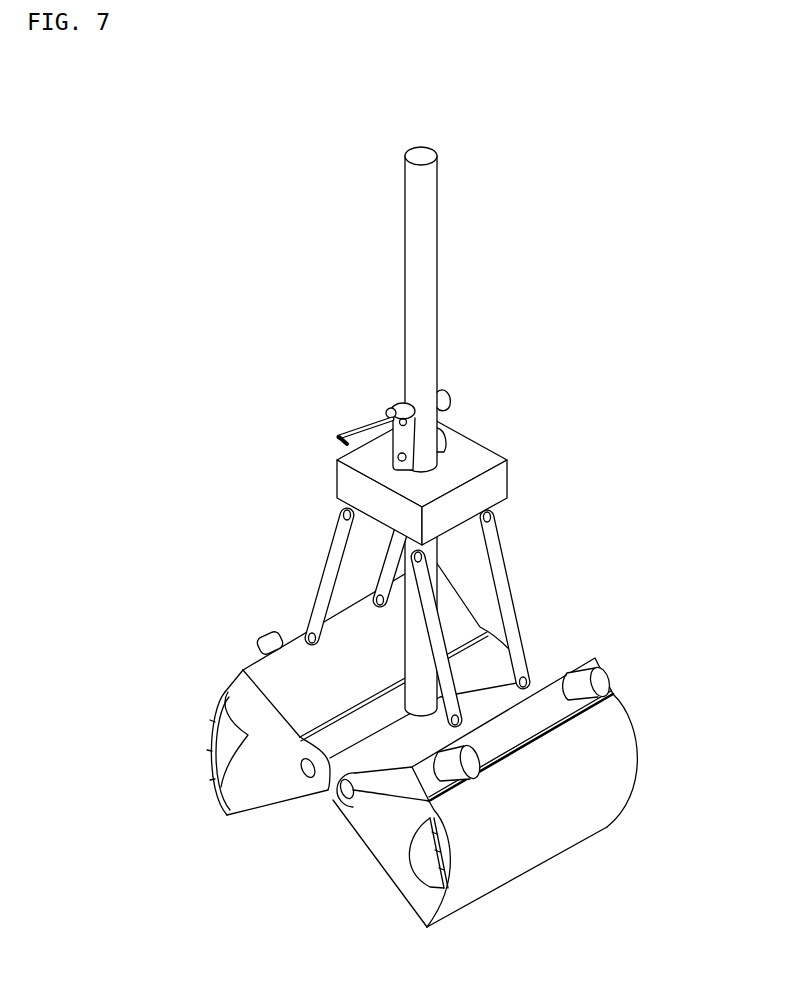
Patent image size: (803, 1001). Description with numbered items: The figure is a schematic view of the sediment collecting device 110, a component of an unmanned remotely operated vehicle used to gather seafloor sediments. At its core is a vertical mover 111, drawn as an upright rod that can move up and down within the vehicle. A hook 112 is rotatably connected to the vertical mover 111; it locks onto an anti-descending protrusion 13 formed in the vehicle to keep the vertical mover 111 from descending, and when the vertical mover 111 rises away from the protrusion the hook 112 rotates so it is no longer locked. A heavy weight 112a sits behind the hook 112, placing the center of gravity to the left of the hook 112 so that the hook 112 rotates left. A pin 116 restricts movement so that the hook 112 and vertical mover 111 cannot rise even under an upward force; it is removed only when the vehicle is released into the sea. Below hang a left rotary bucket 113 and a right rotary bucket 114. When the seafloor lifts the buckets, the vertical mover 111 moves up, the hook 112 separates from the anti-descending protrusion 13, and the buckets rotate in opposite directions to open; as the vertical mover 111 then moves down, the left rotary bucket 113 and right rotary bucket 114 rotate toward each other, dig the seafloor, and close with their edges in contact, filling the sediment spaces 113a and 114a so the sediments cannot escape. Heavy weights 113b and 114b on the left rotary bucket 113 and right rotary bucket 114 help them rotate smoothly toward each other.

The sediment collecting device 110 is at (150, 415).
The vertical mover 111 is at (477, 453).
The hook 112 is at (393, 447).
The weight 112a is at (388, 406).
The anti-descending protrusion 13 is at (453, 422).
The pin 116 is at (360, 434).
The left rotary bucket 113 is at (223, 803).
The sediment space 113a is at (225, 744).
The weight 113b is at (262, 640).
The right rotary bucket 114 is at (420, 905).
The sediment space 114a is at (413, 862).
The weight 114b is at (345, 797).